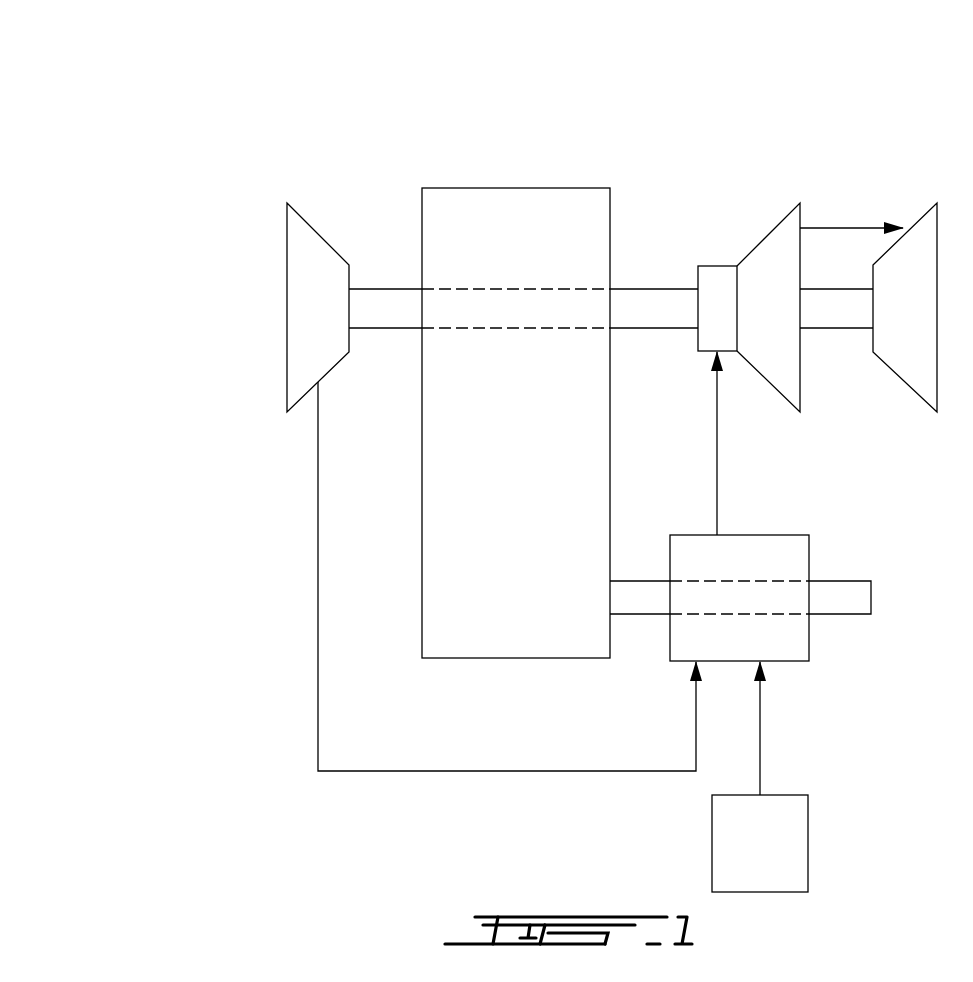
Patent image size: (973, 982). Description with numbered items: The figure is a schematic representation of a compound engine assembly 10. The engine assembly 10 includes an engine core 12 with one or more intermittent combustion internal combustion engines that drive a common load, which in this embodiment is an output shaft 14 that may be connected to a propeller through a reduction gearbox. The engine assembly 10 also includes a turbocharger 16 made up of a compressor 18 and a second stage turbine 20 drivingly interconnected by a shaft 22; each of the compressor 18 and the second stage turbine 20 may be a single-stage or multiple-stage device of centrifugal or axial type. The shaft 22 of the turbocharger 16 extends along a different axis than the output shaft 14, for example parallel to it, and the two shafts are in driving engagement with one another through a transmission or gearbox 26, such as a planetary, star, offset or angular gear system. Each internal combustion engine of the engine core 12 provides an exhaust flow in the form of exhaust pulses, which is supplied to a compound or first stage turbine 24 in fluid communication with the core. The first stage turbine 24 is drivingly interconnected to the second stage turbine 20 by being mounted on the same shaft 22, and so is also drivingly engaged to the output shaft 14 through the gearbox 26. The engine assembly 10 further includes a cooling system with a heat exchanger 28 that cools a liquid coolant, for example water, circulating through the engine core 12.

The compound engine assembly 10 is at (232, 132).
The engine core 12 is at (768, 535).
The output shaft 14 is at (850, 614).
The turbocharger 16 is at (367, 180).
The compressor 18 is at (287, 263).
The second stage turbine 20 is at (925, 218).
The shaft 22 is at (397, 302).
The first stage turbine 24 is at (767, 235).
The gearbox 26 is at (528, 188).
The heat exchanger 28 is at (808, 843).